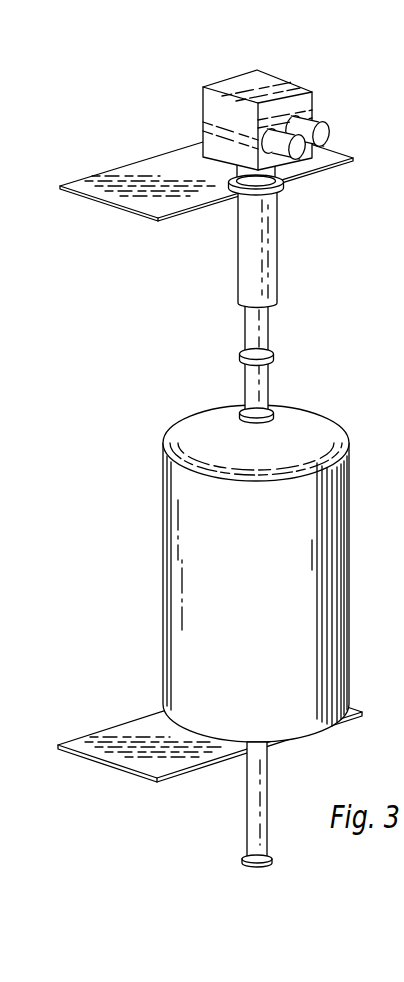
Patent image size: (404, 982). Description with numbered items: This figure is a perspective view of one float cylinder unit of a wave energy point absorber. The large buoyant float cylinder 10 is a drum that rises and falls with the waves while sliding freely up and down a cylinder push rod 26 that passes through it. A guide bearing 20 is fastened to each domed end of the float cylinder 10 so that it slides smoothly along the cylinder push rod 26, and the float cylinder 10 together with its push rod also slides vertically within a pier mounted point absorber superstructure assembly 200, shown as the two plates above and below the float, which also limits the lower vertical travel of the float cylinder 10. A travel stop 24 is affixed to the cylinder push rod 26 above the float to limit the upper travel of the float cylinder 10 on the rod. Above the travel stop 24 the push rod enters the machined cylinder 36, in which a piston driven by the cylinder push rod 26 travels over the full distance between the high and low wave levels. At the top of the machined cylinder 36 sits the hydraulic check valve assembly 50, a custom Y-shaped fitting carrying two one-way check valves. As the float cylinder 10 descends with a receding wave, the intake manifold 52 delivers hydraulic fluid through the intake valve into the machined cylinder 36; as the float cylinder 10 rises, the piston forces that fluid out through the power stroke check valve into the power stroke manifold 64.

The float cylinder 10 is at (333, 543).
The guide bearing 20 is at (273, 414).
The travel stop 24 is at (268, 360).
The cylinder push rod 26 is at (250, 788).
The machined cylinder 36 is at (247, 278).
The hydraulic check valve assembly 50 is at (283, 81).
The intake manifold 52 is at (297, 149).
The power stroke manifold 64 is at (327, 139).
The pier mounted point absorber superstructure assembly 200 is at (153, 167).